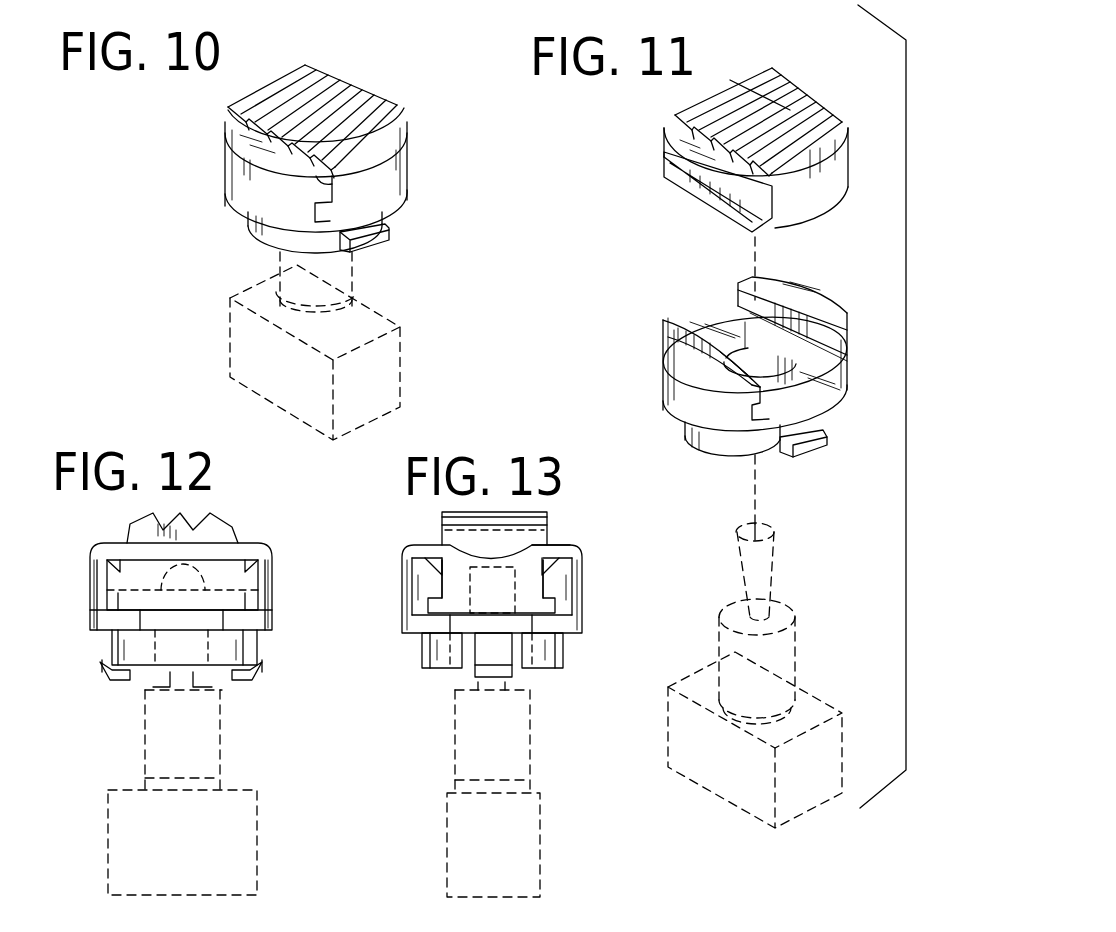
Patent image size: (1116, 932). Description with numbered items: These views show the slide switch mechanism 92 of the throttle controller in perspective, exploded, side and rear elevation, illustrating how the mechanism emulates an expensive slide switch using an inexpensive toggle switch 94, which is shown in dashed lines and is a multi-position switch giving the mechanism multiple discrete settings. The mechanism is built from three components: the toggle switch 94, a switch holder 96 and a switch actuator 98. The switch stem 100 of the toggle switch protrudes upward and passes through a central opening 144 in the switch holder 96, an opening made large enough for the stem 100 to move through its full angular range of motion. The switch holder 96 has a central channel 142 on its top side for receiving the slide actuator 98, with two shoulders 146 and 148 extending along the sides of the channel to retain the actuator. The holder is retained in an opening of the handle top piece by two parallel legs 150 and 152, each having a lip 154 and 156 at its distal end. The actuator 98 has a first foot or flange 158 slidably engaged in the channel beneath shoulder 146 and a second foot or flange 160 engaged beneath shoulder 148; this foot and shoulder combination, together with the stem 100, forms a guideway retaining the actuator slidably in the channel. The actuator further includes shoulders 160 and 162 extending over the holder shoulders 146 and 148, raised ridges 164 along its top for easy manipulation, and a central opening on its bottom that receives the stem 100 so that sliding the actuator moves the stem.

In FIG. 10, the switch mechanism 92 is at (186, 253).
In FIG. 10, the toggle switch 94 is at (402, 368).
In FIG. 11, the toggle switch 94 is at (812, 693).
In FIG. 12, the toggle switch 94 is at (257, 833).
In FIG. 13, the toggle switch 94 is at (543, 833).
In FIG. 10, the switch holder 96 is at (253, 211).
In FIG. 11, the switch holder 96 is at (850, 356).
In FIG. 12, the switch holder 96 is at (263, 547).
In FIG. 13, the switch holder 96 is at (583, 598).
In FIG. 10, the switch actuator 98 is at (393, 92).
In FIG. 11, the switch actuator 98 is at (837, 103).
In FIG. 12, the switch actuator 98 is at (215, 527).
In FIG. 13, the switch actuator 98 is at (550, 522).
In FIG. 11, the switch stem 100 is at (772, 567).
In FIG. 11, the central channel 142 is at (711, 304).
In FIG. 11, the central opening 144 is at (788, 358).
In FIG. 13, the shoulder 146 is at (432, 580).
In FIG. 13, the shoulder 148 is at (580, 575).
In FIG. 10, the leg 150 is at (386, 230).
In FIG. 11, the leg 150 is at (820, 446).
In FIG. 12, the leg 150 is at (108, 680).
In FIG. 12, the leg 152 is at (263, 678).
In FIG. 12, the lip 154 is at (108, 665).
In FIG. 12, the lip 156 is at (262, 665).
In FIG. 13, the first foot or flange 158 is at (404, 602).
In FIG. 13, the second foot or flange 160 is at (418, 546).
In FIG. 13, the shoulder 162 is at (580, 546).
In FIG. 11, the ridge 164 is at (757, 90).